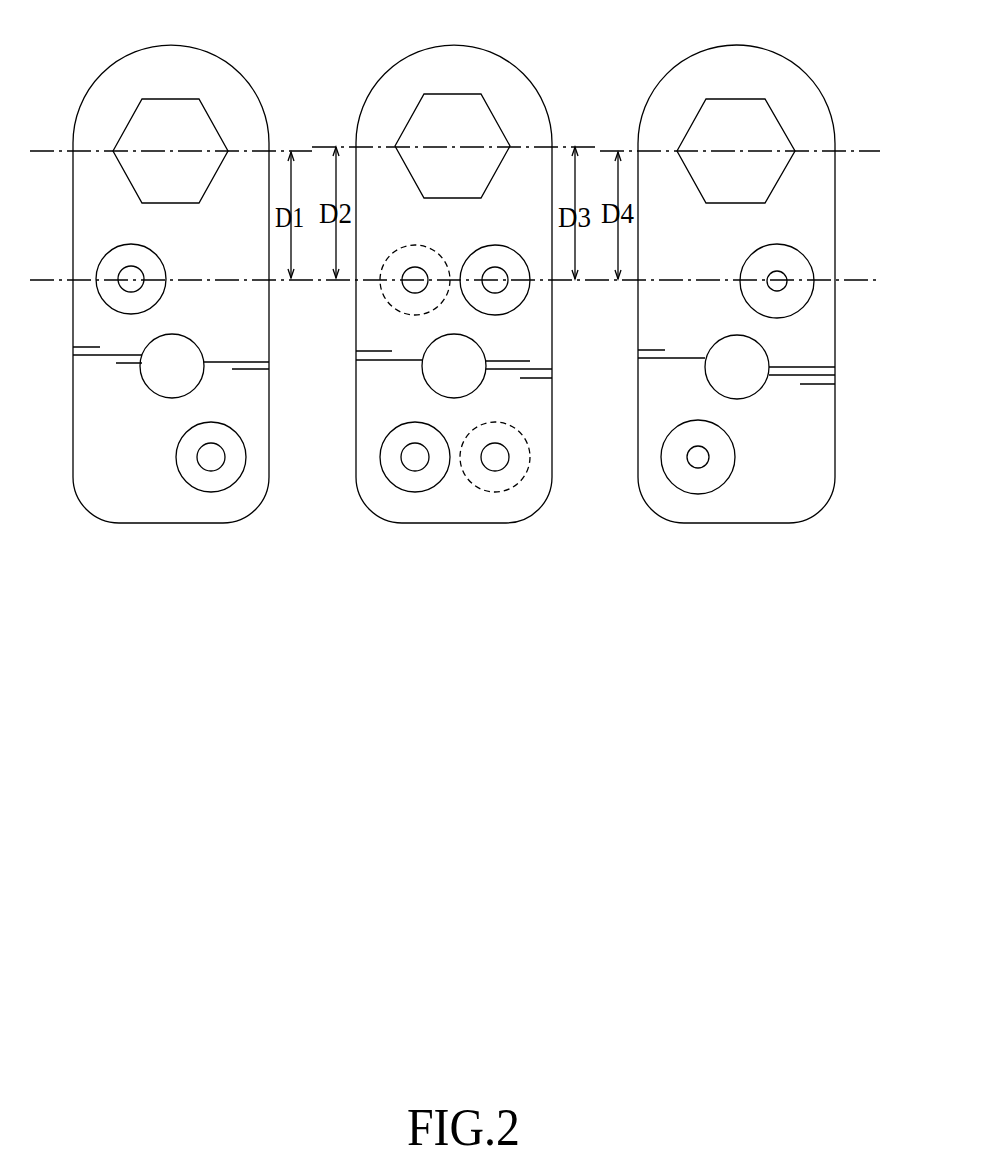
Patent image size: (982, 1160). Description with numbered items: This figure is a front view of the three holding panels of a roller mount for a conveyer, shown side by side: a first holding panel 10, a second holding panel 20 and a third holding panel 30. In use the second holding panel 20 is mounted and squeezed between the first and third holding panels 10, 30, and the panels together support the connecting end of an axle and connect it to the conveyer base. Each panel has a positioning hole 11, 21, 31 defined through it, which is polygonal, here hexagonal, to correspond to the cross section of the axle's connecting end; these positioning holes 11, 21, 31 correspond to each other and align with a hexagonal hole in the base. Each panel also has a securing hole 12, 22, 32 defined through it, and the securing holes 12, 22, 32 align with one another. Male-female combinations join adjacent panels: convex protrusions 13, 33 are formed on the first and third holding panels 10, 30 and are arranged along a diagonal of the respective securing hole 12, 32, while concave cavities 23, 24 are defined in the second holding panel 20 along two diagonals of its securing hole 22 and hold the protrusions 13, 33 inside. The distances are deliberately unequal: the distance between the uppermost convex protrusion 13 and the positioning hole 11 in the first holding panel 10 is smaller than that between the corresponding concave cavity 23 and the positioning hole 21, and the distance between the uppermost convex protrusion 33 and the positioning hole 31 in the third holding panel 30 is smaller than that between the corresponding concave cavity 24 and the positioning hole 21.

The first holding panel 10 is at (170, 512).
The positioning hole 11 is at (212, 123).
The securing hole 12 is at (202, 370).
The convex protrusion 13 is at (112, 302).
The second holding panel 20 is at (453, 513).
The positioning hole 21 is at (465, 100).
The securing hole 22 is at (477, 378).
The concave cavity 23 is at (510, 307).
The concave cavity 24 is at (388, 302).
The third holding panel 30 is at (738, 513).
The positioning hole 31 is at (707, 110).
The securing hole 32 is at (757, 381).
The convex protrusion 33 is at (790, 253).